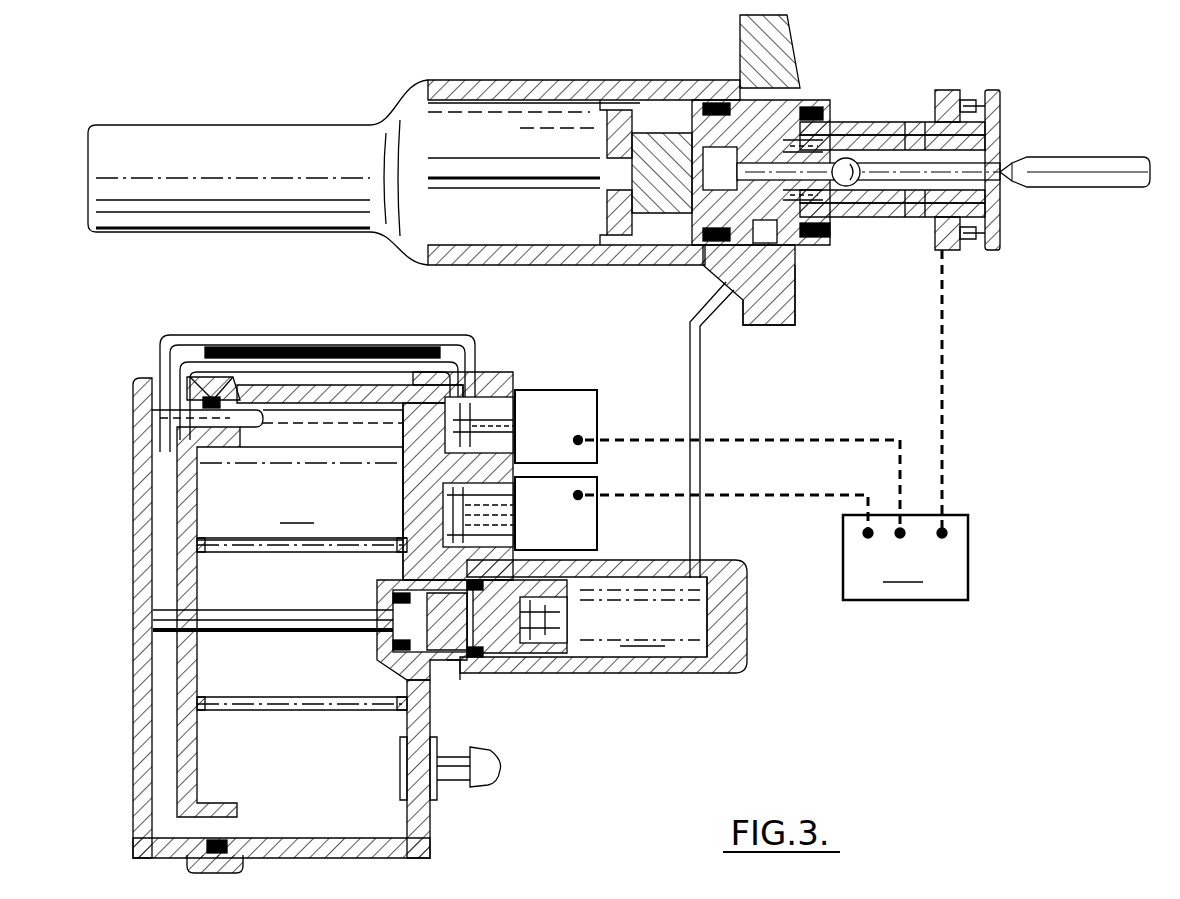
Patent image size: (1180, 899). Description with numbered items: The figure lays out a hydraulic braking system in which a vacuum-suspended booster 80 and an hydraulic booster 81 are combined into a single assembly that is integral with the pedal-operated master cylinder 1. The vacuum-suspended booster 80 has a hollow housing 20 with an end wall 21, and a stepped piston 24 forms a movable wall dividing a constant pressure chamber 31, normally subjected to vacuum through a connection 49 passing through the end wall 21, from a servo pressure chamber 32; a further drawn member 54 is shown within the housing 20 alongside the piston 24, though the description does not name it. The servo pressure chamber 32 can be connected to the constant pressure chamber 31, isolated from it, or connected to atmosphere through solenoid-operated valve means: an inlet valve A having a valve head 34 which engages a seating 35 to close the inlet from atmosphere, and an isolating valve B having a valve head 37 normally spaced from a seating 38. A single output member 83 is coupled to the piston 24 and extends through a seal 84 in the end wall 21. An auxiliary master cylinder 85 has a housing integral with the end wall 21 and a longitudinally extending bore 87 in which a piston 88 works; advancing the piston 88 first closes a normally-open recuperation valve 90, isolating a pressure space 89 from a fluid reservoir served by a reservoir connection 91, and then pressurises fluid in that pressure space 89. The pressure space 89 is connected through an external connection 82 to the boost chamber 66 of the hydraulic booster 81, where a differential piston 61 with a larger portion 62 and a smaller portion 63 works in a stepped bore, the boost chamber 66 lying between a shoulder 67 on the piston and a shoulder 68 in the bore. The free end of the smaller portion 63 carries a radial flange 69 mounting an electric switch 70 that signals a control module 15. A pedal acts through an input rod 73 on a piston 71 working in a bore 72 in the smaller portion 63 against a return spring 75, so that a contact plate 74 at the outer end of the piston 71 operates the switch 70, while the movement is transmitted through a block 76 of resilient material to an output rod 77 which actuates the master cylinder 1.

The master cylinder 1 is at (155, 183).
The control module 15 is at (905, 557).
The hollow housing 20 is at (272, 345).
The end wall 21 is at (437, 492).
The piston 24 is at (172, 655).
The constant pressure chamber 31 is at (302, 481).
The servo pressure chamber 32 is at (163, 720).
The valve head 34 is at (517, 523).
The seating 35 is at (470, 495).
The valve head 37 is at (513, 418).
The seating 38 is at (422, 402).
The connection 49 is at (460, 784).
The piston rod 54 is at (300, 712).
The differential piston 61 is at (866, 122).
The piston portion of greater area 62 is at (633, 135).
The piston portion of smaller area 63 is at (896, 122).
The boost chamber 66 is at (792, 255).
The shoulder 67 is at (806, 100).
The shoulder 68 is at (806, 240).
The radial flange 69 is at (958, 252).
The electric switch 70 is at (972, 247).
The piston 71 is at (870, 198).
The bore 72 is at (918, 125).
The input rod 73 is at (1100, 165).
The contact plate 74 is at (993, 108).
The return spring 75 is at (838, 212).
The block of resilient material 76 is at (630, 183).
The output rod 77 is at (483, 173).
The vacuum-suspended booster 80 is at (133, 480).
The hydraulic booster 81 is at (558, 95).
The external connection 82 is at (697, 398).
The output member 83 is at (272, 618).
The seal 84 is at (425, 630).
The auxiliary master cylinder 85 is at (623, 672).
The bore 87 is at (667, 672).
The piston 88 is at (517, 657).
The pressure space 89 is at (640, 618).
The recuperation valve 90 is at (547, 658).
The reservoir connection 91 is at (452, 662).